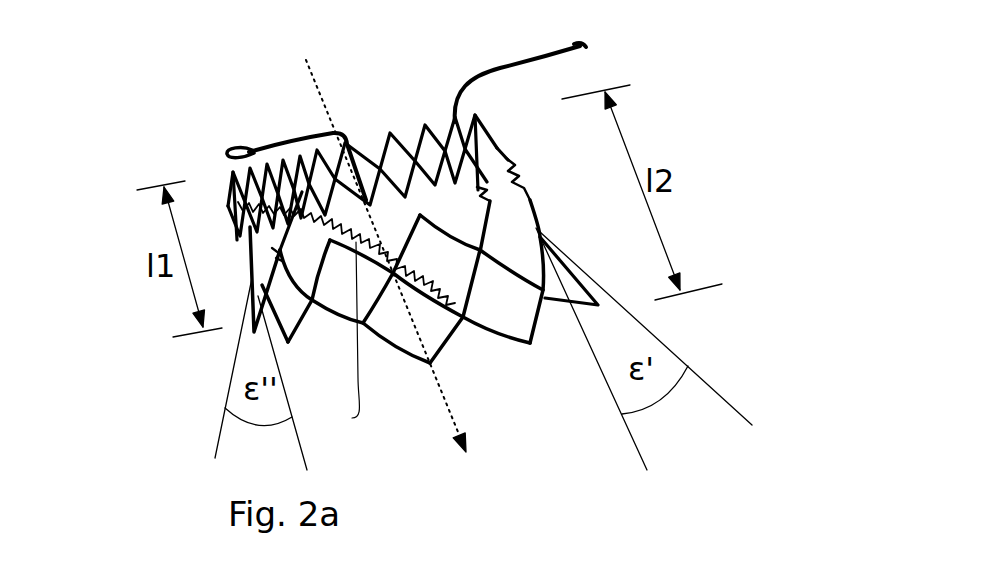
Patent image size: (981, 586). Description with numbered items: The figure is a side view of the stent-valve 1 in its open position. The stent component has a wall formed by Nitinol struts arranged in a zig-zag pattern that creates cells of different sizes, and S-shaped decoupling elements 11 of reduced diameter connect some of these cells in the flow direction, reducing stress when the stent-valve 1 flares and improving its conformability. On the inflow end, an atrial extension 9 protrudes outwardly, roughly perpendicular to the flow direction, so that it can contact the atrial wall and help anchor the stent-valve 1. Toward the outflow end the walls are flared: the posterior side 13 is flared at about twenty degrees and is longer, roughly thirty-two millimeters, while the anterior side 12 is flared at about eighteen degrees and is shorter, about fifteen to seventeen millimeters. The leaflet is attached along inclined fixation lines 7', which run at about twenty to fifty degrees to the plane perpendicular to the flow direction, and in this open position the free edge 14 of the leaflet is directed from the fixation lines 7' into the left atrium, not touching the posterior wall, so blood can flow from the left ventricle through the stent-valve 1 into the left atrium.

The stent-valve 1 is at (236, 82).
The atrial extension 9 is at (532, 68).
The S-shaped decoupling element 11 is at (270, 251).
The anterior side 12 is at (212, 191).
The posterior side 13 is at (550, 183).
The free edge of the leaflet 14 is at (497, 377).
The fixation line 7' is at (339, 340).